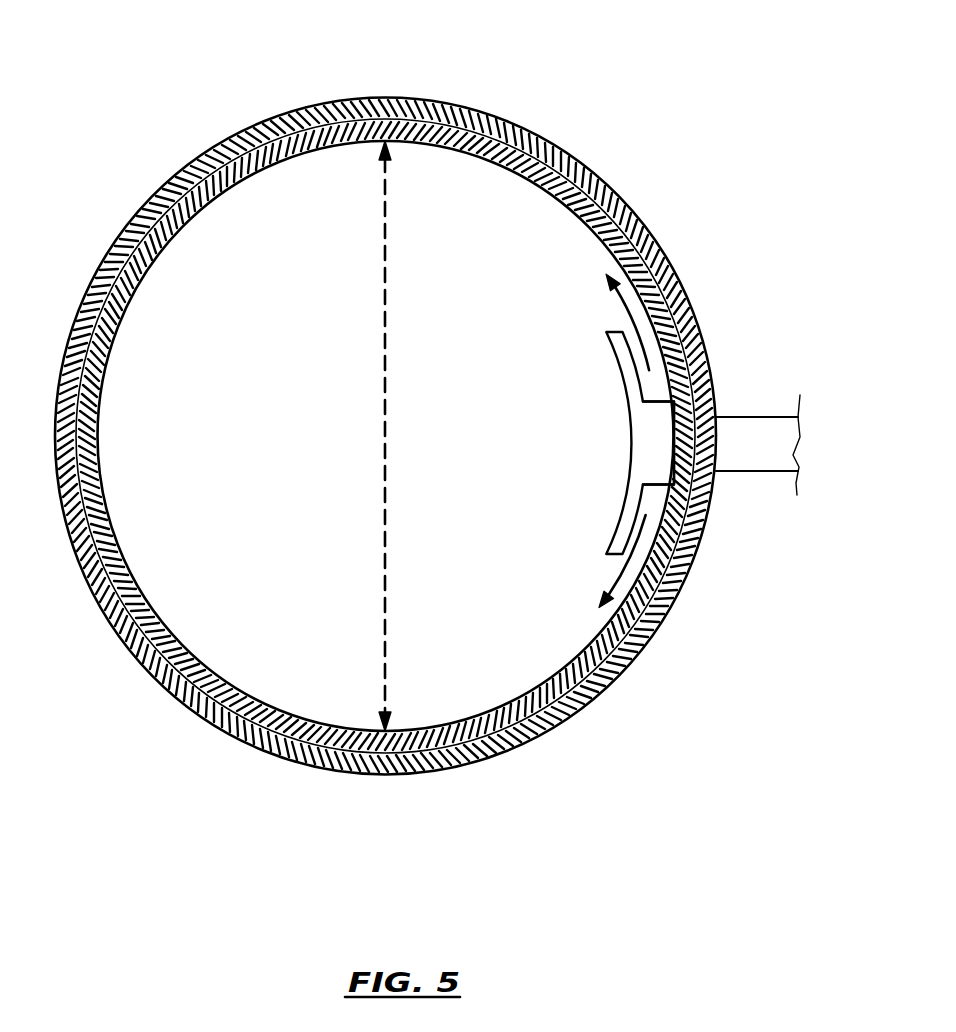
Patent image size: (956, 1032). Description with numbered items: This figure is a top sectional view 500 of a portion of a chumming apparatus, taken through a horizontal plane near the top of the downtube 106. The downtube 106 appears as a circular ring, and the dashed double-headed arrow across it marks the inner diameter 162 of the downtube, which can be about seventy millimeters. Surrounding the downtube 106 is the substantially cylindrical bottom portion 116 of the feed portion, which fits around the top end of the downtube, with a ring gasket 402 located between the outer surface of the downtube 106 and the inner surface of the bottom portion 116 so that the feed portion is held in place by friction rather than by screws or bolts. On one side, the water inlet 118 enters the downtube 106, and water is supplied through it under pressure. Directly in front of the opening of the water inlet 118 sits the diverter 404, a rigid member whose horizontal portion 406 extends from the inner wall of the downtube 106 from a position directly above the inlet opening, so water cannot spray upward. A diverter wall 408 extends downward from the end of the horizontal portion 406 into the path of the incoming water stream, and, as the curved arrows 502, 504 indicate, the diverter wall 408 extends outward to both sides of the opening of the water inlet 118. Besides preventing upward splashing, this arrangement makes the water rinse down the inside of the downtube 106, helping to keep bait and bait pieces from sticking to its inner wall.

The top sectional view 500 is at (98, 47).
The bottom portion of the feed portion 116 is at (455, 112).
The ring gasket 402 is at (330, 114).
The downtube 106 is at (143, 270).
The inner diameter of the downtube 162 is at (385, 487).
The water inlet 118 is at (762, 417).
The diverter 404 is at (556, 443).
The horizontal portion 406 is at (655, 442).
The diverter wall 408 is at (617, 362).
The arrow 502 is at (622, 308).
The arrow 504 is at (625, 582).